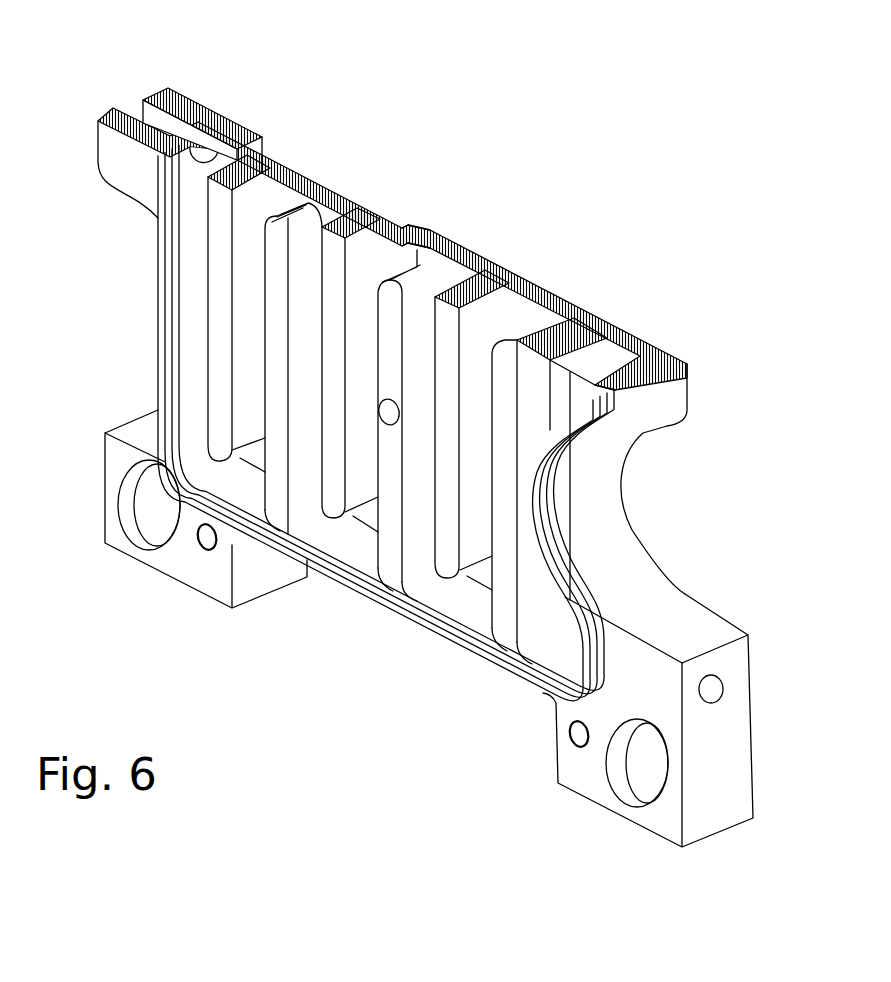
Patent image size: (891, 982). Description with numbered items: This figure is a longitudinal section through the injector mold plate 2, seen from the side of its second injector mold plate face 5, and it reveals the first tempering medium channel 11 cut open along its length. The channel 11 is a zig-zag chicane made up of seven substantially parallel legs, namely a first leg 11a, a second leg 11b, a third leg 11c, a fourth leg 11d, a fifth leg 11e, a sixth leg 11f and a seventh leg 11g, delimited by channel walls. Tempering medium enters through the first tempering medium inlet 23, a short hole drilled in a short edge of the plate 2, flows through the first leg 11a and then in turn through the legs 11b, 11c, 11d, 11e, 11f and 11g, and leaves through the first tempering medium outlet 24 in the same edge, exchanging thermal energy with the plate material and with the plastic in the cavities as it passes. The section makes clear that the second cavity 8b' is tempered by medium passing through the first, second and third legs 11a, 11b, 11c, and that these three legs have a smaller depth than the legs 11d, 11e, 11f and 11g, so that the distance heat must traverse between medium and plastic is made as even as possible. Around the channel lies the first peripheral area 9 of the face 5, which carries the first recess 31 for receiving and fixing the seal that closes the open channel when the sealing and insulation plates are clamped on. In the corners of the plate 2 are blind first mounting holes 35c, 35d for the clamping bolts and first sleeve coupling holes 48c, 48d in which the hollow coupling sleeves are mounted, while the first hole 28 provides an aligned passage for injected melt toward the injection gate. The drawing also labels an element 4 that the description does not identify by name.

The injector mold plate 2 is at (689, 270).
The end block 4 is at (600, 323).
The second injector mold plate face 5 is at (397, 567).
The second cavity 8b' is at (399, 174).
The first peripheral area 9 is at (162, 332).
The first tempering medium channel 11 is at (327, 552).
The first leg 11a is at (197, 297).
The second leg 11b is at (245, 240).
The third leg 11c is at (312, 478).
The fourth leg 11d is at (388, 263).
The fifth leg 11e is at (433, 550).
The sixth leg 11f is at (473, 367).
The seventh leg 11g is at (547, 620).
The first tempering medium inlet 23 is at (145, 110).
The first tempering medium outlet 24 is at (723, 690).
The first hole 28 is at (388, 428).
The first recess 31 is at (470, 650).
The first mounting hole 35c is at (205, 545).
The first mounting hole 35d is at (580, 742).
The first sleeve coupling hole 48c is at (147, 510).
The first sleeve coupling hole 48d is at (647, 767).